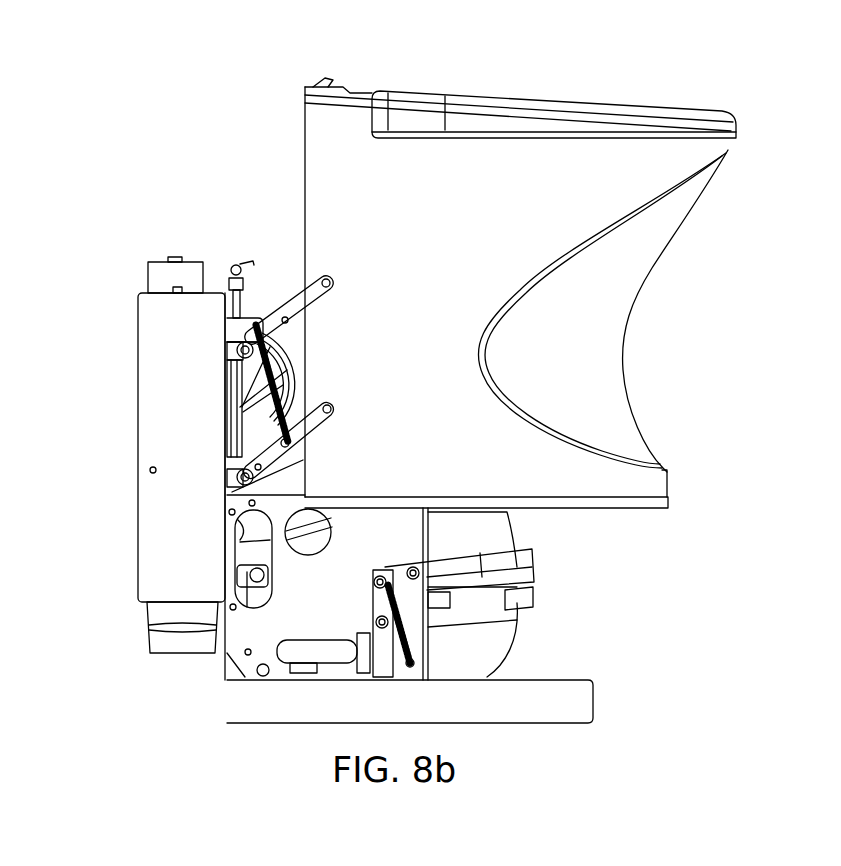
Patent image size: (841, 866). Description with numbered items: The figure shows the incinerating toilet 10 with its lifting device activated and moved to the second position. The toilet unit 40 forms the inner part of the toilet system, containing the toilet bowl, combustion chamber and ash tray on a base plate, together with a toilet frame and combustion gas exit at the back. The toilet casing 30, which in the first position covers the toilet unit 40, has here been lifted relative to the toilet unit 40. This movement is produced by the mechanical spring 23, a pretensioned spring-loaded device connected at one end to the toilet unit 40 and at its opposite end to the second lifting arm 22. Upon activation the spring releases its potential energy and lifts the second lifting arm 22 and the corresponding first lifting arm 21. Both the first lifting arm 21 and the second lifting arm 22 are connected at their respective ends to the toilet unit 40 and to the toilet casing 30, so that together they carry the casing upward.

The incinerating toilet 10 is at (284, 62).
The first lifting arm 21 is at (307, 290).
The second lifting arm 22 is at (297, 433).
The mechanical spring 23 is at (247, 380).
The toilet casing 30 is at (605, 410).
The toilet unit 40 is at (273, 630).